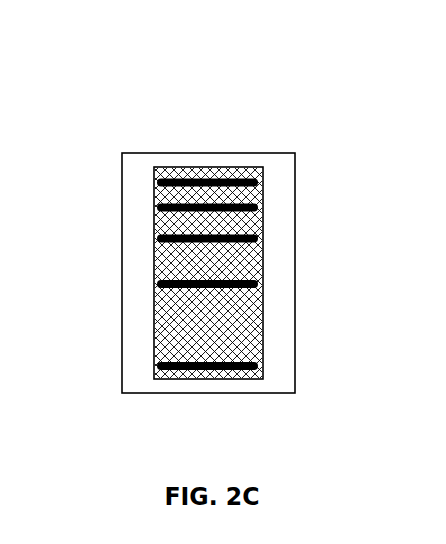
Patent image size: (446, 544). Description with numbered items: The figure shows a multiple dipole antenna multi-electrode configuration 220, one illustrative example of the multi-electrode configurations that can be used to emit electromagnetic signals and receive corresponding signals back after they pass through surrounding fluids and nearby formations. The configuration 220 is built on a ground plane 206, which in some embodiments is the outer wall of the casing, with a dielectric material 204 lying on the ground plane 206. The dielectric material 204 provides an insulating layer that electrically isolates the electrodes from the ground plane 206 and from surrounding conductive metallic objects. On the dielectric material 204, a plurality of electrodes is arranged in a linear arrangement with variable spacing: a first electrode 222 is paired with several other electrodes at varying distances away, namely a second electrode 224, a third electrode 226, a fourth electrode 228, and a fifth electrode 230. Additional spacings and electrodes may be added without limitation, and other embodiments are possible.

The multi-electrode configuration 220 is at (143, 80).
The dielectric material 204 is at (264, 220).
The ground plane 206 is at (296, 295).
The first electrode 222 is at (155, 182).
The second electrode 224 is at (155, 208).
The third electrode 226 is at (155, 238).
The fourth electrode 228 is at (155, 284).
The fifth electrode 230 is at (155, 365).